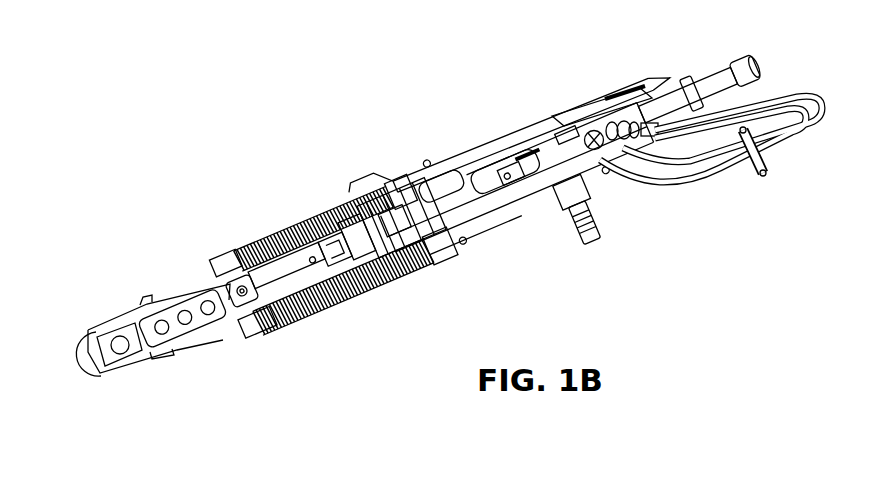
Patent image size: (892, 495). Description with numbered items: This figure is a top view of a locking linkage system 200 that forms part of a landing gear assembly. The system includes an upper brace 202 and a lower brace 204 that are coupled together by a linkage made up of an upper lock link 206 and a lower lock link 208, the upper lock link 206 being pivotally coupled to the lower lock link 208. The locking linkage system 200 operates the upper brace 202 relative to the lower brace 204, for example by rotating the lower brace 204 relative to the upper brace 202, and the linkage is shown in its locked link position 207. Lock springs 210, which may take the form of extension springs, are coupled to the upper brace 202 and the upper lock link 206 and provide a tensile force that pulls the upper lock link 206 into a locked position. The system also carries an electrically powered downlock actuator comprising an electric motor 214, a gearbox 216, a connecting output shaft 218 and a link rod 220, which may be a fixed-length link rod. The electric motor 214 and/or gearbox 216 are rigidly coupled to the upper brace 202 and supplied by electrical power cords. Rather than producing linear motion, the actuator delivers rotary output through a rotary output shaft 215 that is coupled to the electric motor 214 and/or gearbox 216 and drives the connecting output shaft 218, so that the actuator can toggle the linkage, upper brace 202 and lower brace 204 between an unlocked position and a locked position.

The locking linkage system 200 is at (449, 213).
The upper brace 202 is at (524, 203).
The lower brace 204 is at (190, 344).
The upper lock link 206 is at (367, 242).
The locked link position 207 is at (380, 243).
The lower lock link 208 is at (303, 268).
The lock springs 210 is at (256, 240).
The electric motor 214 is at (586, 204).
The rotary output shaft 215 is at (570, 130).
The gearbox 216 is at (590, 163).
The connecting output shaft 218 is at (530, 167).
The link rod 220 is at (447, 181).